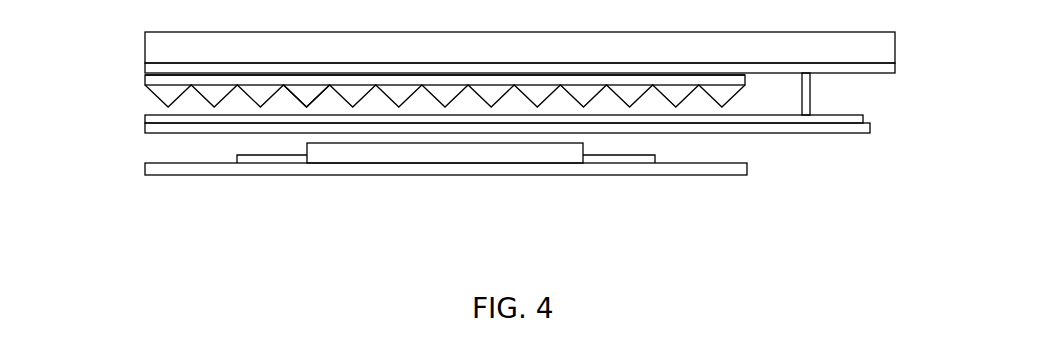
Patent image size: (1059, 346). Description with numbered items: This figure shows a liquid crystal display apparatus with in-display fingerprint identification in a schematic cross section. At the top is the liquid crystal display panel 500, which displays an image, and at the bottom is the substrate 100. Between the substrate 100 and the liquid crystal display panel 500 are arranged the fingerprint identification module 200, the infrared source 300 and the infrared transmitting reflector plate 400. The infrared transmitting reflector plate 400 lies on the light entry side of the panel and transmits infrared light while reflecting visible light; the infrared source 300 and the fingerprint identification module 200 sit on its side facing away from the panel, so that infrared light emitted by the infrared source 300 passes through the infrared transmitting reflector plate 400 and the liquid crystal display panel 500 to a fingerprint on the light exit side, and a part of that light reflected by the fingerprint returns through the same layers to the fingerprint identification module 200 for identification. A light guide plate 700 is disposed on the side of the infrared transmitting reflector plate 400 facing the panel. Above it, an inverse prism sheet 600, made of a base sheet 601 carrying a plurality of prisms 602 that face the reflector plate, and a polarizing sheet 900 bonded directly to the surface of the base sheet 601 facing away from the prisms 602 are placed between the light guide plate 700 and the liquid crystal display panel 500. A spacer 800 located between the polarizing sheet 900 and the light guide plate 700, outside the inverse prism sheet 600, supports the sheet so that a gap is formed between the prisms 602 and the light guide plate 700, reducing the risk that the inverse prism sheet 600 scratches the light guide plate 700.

The substrate 100 is at (483, 159).
The fingerprint identification module 200 is at (469, 179).
The infrared source 300 is at (448, 185).
The infrared transmitting reflector plate 400 is at (544, 117).
The liquid crystal display panel 500 is at (520, 35).
The inverse prism sheet 600 is at (403, 76).
The base sheet 601 is at (445, 140).
The prisms 602 is at (348, 144).
The light guide plate 700 is at (462, 104).
The spacer 800 is at (841, 94).
The polarizing sheet 900 is at (556, 58).